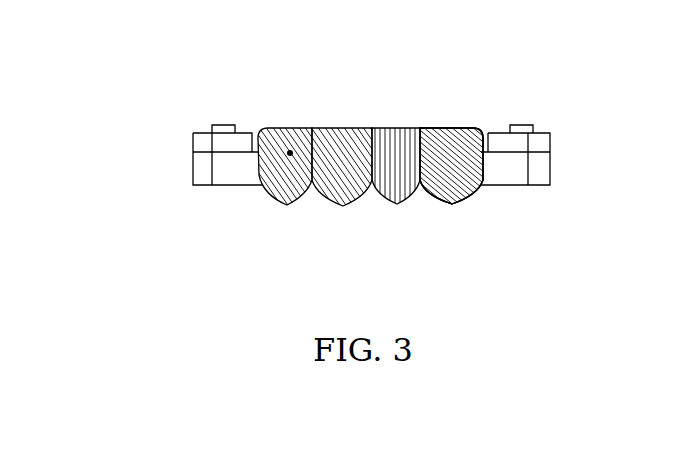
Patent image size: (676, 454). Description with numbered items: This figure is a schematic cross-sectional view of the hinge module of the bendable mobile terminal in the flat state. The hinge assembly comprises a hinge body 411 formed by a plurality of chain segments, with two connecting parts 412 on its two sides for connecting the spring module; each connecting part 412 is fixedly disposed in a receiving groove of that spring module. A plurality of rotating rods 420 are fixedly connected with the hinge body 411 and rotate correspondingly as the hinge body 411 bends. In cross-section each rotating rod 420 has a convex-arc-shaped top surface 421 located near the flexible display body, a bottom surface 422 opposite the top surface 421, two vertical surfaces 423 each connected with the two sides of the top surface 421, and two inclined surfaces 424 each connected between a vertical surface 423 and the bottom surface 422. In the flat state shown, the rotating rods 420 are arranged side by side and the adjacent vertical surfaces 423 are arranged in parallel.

The hinge body 411 is at (352, 127).
The connecting part 412 is at (230, 197).
The rotating rod 420 is at (280, 128).
The top surface 421 is at (459, 127).
The bottom surface 422 is at (455, 198).
The vertical surface 423 is at (512, 125).
The inclined surface 424 is at (482, 185).